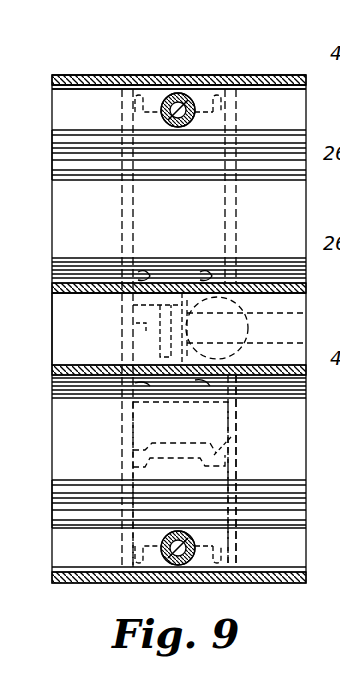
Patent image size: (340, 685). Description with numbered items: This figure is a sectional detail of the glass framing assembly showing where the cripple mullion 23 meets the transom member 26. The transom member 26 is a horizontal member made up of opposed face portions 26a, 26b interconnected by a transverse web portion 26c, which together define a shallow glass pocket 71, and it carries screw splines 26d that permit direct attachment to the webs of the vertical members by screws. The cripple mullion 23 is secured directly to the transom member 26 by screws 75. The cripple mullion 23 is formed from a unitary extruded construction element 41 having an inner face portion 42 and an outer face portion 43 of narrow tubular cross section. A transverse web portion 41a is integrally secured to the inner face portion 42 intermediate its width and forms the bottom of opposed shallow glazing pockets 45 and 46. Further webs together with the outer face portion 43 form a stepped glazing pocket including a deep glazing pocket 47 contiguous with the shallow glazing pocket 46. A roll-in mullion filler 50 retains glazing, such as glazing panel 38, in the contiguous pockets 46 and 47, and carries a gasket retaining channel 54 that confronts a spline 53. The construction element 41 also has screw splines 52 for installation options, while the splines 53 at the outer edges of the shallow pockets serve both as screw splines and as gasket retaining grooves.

The transom member 26 is at (76, 584).
The face portion 26a is at (289, 584).
The face portion 26b is at (76, 74).
The transverse web portion 26c is at (62, 332).
The screw splines 26d is at (53, 153).
The cripple mullion 23 is at (242, 107).
The inner face portion 42 is at (143, 88).
The outer face portion 43 is at (222, 584).
The screws 75 is at (172, 96).
The screw splines 52 is at (186, 96).
The construction element 41 is at (233, 217).
The transverse web portion 41a is at (133, 307).
The shallow glazing pocket 45 is at (128, 326).
The splines 53 is at (136, 294).
The shallow glass pocket 71 is at (58, 300).
The glazing panel 38 is at (298, 316).
The shallow glazing pocket 46 is at (140, 416).
The gasket retaining channel 54 is at (214, 382).
The mullion filler 50 is at (237, 405).
The deep glazing pocket 47 is at (133, 420).